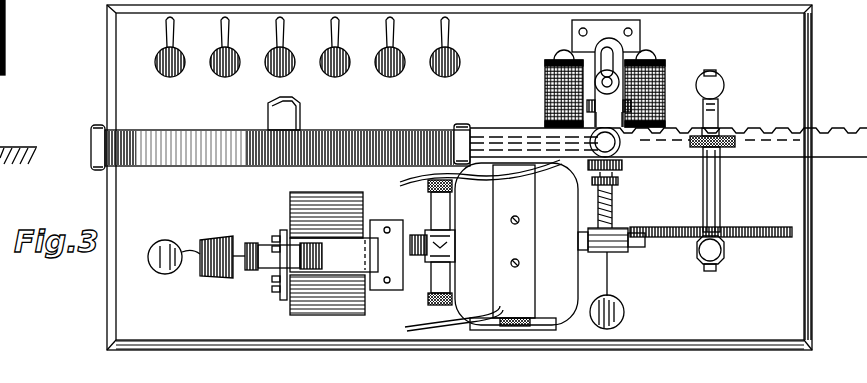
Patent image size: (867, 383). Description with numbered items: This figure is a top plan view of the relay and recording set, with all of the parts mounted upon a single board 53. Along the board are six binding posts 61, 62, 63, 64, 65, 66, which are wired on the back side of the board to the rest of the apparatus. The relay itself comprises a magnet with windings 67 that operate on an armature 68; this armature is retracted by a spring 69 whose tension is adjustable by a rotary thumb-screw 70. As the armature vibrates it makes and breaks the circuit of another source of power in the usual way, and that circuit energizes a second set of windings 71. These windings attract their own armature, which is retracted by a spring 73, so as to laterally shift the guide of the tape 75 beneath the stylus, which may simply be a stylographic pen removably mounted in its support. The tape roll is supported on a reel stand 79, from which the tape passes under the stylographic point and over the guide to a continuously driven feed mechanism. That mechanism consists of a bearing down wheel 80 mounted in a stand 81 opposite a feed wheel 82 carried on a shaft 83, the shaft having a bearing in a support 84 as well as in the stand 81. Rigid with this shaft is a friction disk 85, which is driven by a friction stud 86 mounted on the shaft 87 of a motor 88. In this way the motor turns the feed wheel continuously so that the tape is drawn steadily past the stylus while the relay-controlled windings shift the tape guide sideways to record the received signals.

The board 53 is at (459, 177).
The binding post 61 is at (170, 59).
The binding post 62 is at (225, 59).
The binding post 63 is at (280, 59).
The binding post 64 is at (335, 59).
The binding post 65 is at (390, 59).
The binding post 66 is at (445, 59).
The windings 67 is at (330, 207).
The armature 68 is at (280, 228).
The spring 69 is at (217, 278).
The rotary thumb-screw 70 is at (165, 255).
The windings 71 is at (553, 97).
The spring 73 is at (338, 131).
The tape 75 is at (832, 158).
The reel stand 79 is at (268, 113).
The bearing down wheel 80 is at (736, 130).
The stand 81 is at (716, 82).
The feed wheel 82 is at (726, 152).
The shaft 83 is at (705, 183).
The support 84 is at (718, 256).
The friction disk 85 is at (758, 228).
The friction stud 86 is at (636, 252).
The shaft 87 is at (610, 255).
The motor 88 is at (474, 245).